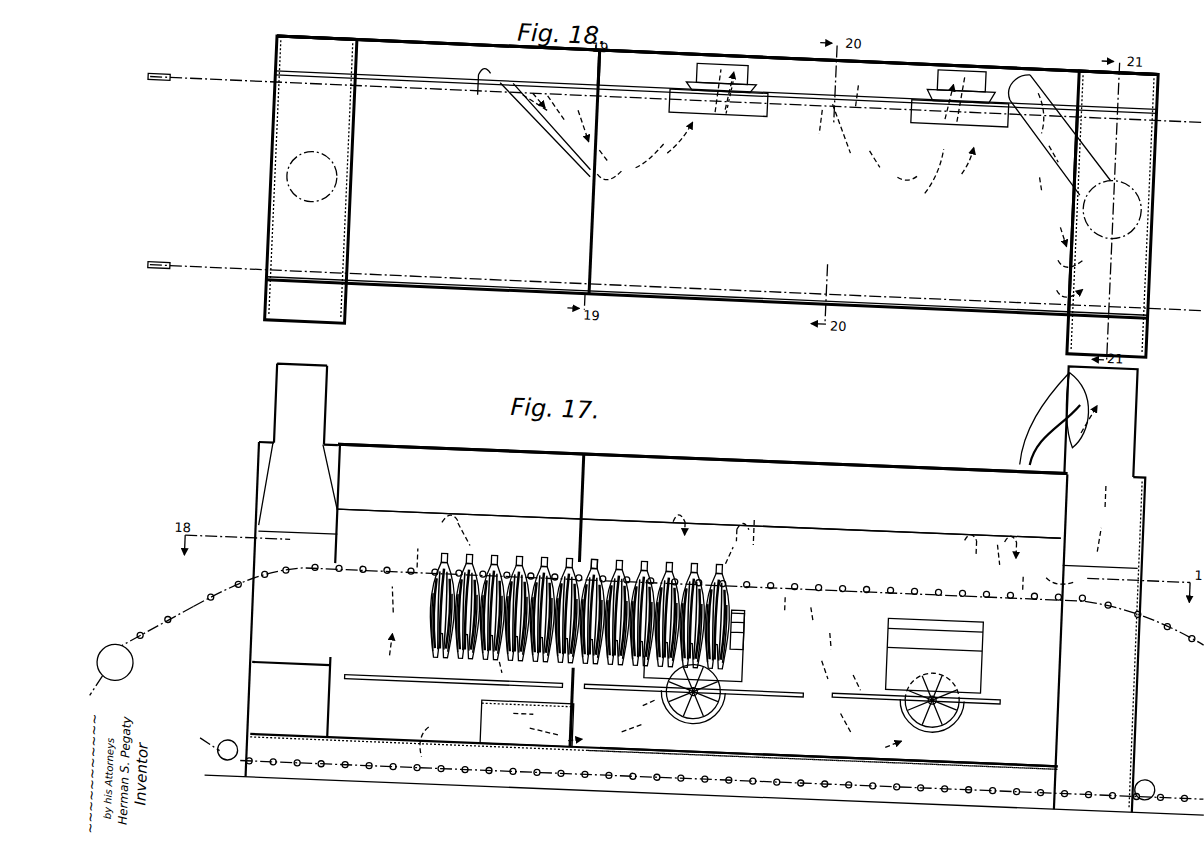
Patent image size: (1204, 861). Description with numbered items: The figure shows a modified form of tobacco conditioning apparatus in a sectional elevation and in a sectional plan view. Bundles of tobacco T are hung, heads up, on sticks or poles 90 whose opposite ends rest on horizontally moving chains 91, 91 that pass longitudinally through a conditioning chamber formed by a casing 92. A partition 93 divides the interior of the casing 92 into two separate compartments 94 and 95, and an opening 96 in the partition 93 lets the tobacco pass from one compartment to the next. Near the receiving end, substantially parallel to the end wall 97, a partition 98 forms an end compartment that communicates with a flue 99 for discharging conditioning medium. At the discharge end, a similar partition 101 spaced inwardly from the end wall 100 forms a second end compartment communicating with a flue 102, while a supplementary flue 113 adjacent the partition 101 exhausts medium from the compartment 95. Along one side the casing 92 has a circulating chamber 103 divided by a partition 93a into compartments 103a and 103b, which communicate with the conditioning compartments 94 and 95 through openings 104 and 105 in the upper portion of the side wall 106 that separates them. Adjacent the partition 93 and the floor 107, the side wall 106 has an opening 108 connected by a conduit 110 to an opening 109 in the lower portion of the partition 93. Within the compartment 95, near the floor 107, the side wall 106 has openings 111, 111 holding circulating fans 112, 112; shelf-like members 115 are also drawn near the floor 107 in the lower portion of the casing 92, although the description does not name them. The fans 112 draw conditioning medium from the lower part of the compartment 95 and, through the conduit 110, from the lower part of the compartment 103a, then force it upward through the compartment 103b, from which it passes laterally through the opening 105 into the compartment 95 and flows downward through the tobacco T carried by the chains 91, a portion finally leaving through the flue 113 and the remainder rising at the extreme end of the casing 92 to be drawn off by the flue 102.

In FIG. 17, the sticks or poles 90 is at (500, 556).
In FIG. 18, the chains 91 is at (738, 280).
In FIG. 17, the chains 91 is at (386, 562).
In FIG. 17, the casing 92 is at (803, 734).
In FIG. 18, the partition 93 is at (603, 235).
In FIG. 17, the partition 93 is at (588, 477).
In FIG. 18, the partition 93a is at (603, 65).
In FIG. 17, the compartment 94 is at (459, 495).
In FIG. 17, the compartment 95 is at (821, 507).
In FIG. 17, the opening 96 is at (595, 558).
In FIG. 18, the end wall 97 is at (277, 168).
In FIG. 17, the end wall 97 is at (257, 561).
In FIG. 17, the partition 98 is at (341, 483).
In FIG. 18, the flue 99 is at (340, 190).
In FIG. 17, the flue 99 is at (326, 414).
In FIG. 18, the end wall 100 is at (1161, 240).
In FIG. 17, the end wall 100 is at (1147, 504).
In FIG. 18, the partition 101 is at (1078, 237).
In FIG. 17, the partition 101 is at (1066, 478).
In FIG. 18, the flue 102 is at (1118, 203).
In FIG. 17, the flue 102 is at (1120, 424).
In FIG. 18, the circulating chamber 103 is at (618, 38).
In FIG. 18, the compartment 103a is at (423, 50).
In FIG. 18, the compartment 103b is at (784, 48).
In FIG. 17, the opening 104 is at (548, 450).
In FIG. 17, the opening 105 is at (718, 456).
In FIG. 18, the side wall 106 is at (826, 80).
In FIG. 17, the side wall 106 is at (690, 508).
In FIG. 17, the floor 107 is at (688, 734).
In FIG. 18, the opening 108 is at (535, 72).
In FIG. 17, the opening 108 is at (503, 736).
In FIG. 18, the opening 109 is at (603, 120).
In FIG. 17, the opening 109 is at (586, 728).
In FIG. 18, the conduit 110 is at (558, 126).
In FIG. 17, the conduit 110 is at (495, 696).
In FIG. 17, the openings 111 is at (722, 702).
In FIG. 18, the circulating fans 112 is at (698, 57).
In FIG. 17, the circulating fans 112 is at (728, 689).
In FIG. 18, the supplementary flue 113 is at (1042, 76).
In FIG. 17, the supplementary flue 113 is at (1040, 358).
In FIG. 17, the shelf 115 is at (406, 676).
In FIG. 17, the bundles of tobacco T is at (751, 612).